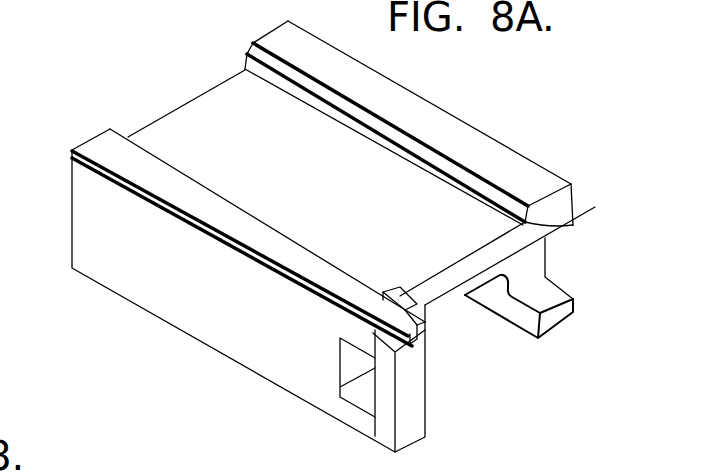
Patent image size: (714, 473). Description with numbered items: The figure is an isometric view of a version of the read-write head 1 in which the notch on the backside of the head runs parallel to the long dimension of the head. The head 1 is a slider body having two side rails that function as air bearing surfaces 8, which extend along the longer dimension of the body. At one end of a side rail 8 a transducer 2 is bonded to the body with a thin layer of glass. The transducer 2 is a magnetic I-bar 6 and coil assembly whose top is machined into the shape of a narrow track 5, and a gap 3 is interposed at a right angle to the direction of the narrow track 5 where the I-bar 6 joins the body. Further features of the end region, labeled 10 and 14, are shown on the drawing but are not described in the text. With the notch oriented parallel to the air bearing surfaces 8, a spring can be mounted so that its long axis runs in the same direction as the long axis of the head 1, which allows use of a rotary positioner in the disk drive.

The read-write head 1 is at (273, 33).
The transducer 2 is at (365, 403).
The gap 3 is at (382, 292).
The narrow track 5 is at (420, 322).
The I-bar 6 is at (420, 427).
The air bearing surfaces 8 is at (90, 140).
The end stop 10 is at (577, 197).
The mounting tab 14 is at (453, 302).